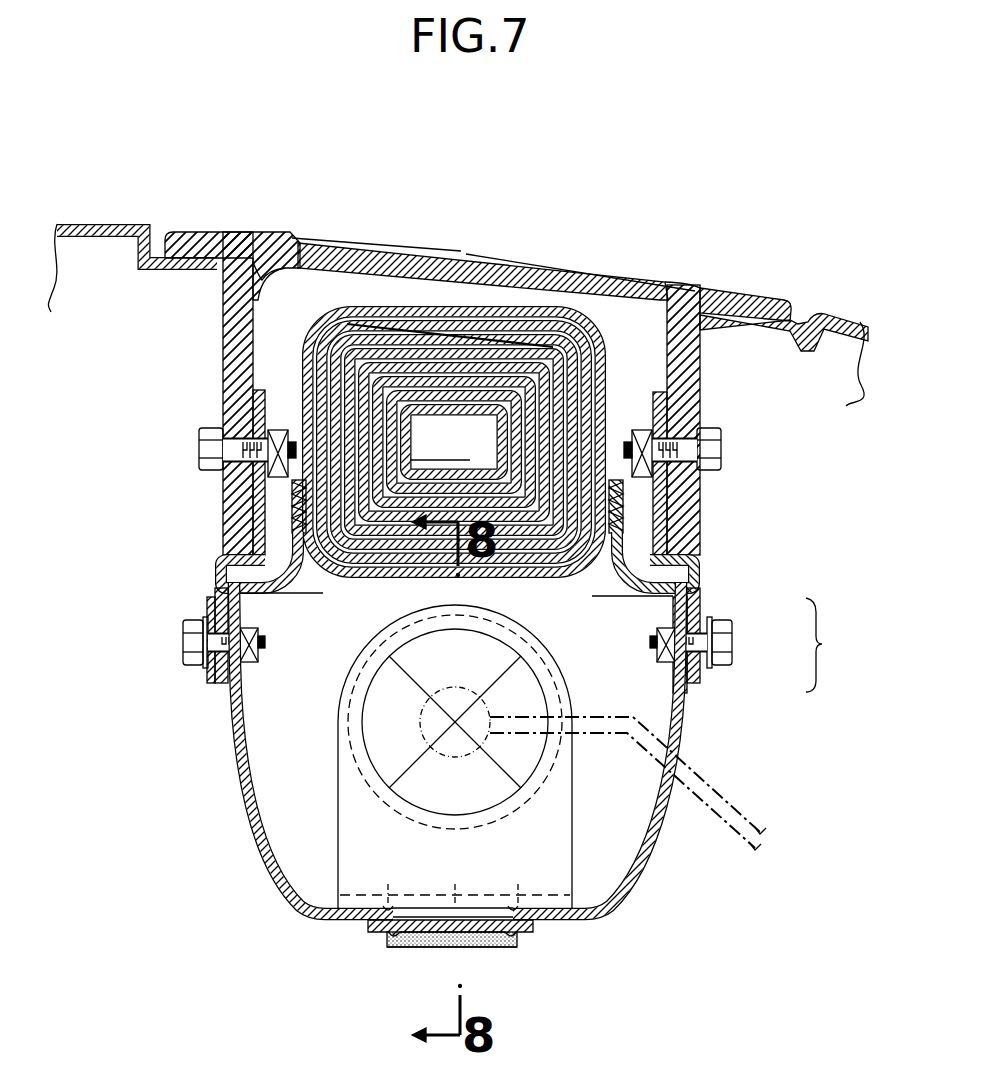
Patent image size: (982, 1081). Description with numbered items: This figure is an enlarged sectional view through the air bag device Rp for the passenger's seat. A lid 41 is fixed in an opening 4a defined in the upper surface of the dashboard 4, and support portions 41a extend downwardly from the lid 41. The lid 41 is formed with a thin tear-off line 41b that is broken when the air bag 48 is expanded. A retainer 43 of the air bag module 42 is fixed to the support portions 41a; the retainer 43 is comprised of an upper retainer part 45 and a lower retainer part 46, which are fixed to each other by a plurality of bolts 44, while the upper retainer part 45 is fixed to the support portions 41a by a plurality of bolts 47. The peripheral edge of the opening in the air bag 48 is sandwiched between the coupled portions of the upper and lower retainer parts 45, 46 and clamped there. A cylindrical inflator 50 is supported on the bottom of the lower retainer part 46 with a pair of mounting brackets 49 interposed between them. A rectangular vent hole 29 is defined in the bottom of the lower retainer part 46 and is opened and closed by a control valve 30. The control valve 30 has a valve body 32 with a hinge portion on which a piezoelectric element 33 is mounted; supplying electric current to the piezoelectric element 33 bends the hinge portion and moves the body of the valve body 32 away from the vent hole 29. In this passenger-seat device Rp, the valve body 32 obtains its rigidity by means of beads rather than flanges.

The dashboard 4 is at (107, 218).
The opening 4a is at (222, 286).
The air bag device for passenger's seat Rp is at (613, 258).
The lid 41 is at (243, 229).
The support portions 41a is at (230, 512).
The thin tear-off line 41b is at (462, 255).
The air bag module 42 is at (228, 776).
The retainer 43 is at (833, 645).
The bolts 44 is at (188, 640).
The upper retainer part 45 is at (700, 577).
The lower retainer part 46 is at (678, 712).
The bolts 47 is at (208, 443).
The air bag 48 is at (598, 316).
The mounting brackets 49 is at (556, 850).
The cylindrical inflator 50 is at (355, 746).
The rectangular vent hole 29 is at (400, 905).
The control valve 30 is at (383, 955).
The valve body 32 is at (536, 928).
The piezoelectric element 33 is at (422, 940).